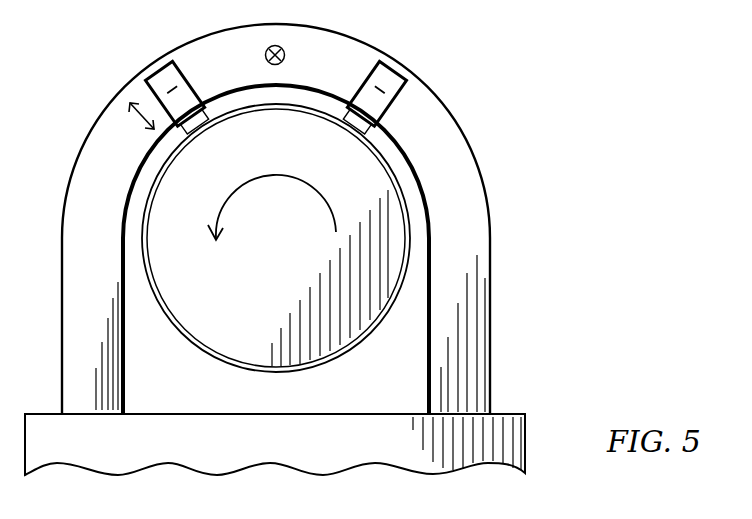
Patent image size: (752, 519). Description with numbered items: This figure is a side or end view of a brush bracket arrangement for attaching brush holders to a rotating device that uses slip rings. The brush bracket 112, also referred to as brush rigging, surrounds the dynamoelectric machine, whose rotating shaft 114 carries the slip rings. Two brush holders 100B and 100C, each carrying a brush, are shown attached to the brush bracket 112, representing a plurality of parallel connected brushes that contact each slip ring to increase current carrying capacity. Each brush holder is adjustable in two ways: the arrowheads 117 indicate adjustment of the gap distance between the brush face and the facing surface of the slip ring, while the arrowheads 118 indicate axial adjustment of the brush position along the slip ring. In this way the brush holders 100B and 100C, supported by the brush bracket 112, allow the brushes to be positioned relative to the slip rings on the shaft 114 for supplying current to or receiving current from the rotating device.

The brush bracket 112 is at (484, 183).
The rotating shaft 114 is at (403, 257).
The arrowheads 117 is at (135, 114).
The arrowheads 118 is at (265, 50).
The brush holder 100B is at (155, 75).
The brush holder 100C is at (400, 71).